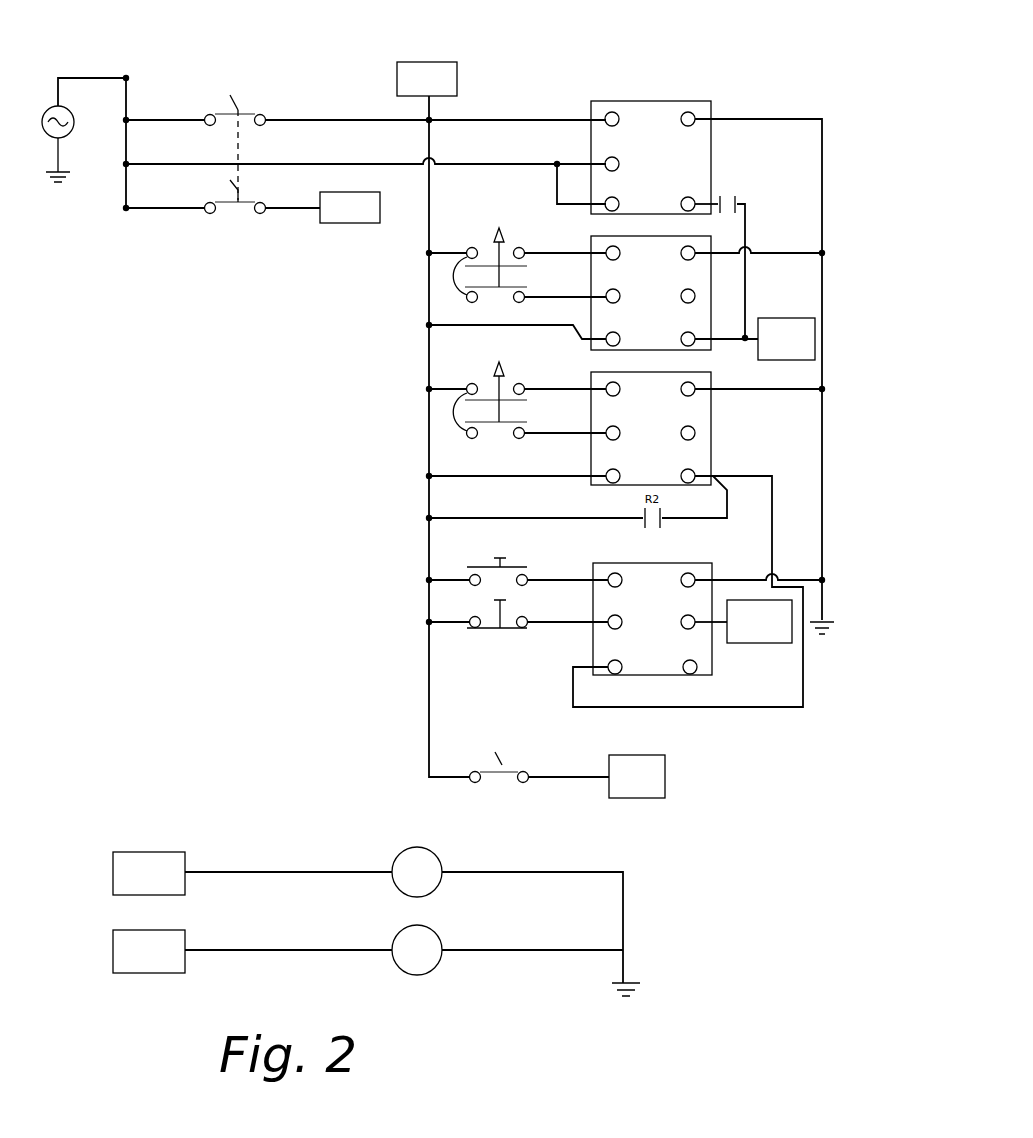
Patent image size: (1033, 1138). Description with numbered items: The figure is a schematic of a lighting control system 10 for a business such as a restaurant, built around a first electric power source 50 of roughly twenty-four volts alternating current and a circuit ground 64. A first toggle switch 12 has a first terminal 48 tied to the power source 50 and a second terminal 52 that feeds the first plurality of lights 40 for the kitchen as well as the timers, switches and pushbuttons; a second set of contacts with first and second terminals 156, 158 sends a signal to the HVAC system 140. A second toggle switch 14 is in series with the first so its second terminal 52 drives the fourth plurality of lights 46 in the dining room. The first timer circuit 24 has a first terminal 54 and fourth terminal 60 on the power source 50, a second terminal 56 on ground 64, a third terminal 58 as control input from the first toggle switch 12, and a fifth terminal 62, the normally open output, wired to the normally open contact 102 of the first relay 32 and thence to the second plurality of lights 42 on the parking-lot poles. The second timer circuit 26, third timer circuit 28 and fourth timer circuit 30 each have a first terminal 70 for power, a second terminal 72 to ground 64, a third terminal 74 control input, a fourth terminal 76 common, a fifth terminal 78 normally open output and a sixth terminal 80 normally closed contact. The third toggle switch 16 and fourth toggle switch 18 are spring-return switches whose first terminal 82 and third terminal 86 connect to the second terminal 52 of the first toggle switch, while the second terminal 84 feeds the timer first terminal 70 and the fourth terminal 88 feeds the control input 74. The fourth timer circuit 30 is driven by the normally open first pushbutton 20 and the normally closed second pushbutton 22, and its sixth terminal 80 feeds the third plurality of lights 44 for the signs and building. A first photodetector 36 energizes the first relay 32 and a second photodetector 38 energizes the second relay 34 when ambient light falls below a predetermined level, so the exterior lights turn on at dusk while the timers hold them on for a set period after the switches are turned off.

The lighting control system 10 is at (132, 503).
The first toggle switch 12 is at (263, 102).
The second toggle switch 14 is at (467, 712).
The third toggle switch 16 is at (490, 208).
The fourth toggle switch 18 is at (457, 348).
The first pushbutton 20 is at (470, 545).
The second pushbutton 22 is at (467, 653).
The first timer circuit 24 is at (647, 100).
The second timer circuit 26 is at (677, 235).
The third timer circuit 28 is at (663, 373).
The fourth timer circuit 30 is at (658, 563).
The first relay 32 is at (407, 850).
The second relay 34 is at (417, 977).
The first photodetector 36 is at (112, 882).
The second photodetector 38 is at (112, 950).
The first plurality of lights 40 is at (447, 62).
The second plurality of lights 42 is at (792, 318).
The third plurality of lights 44 is at (777, 645).
The fourth plurality of lights 46 is at (667, 775).
The first terminal 48 is at (205, 126).
The first electric power source 50 is at (77, 140).
The second terminal 52 is at (265, 126).
The first terminal 54 is at (606, 155).
The second terminal 56 is at (690, 108).
The third terminal 58 is at (610, 108).
The fourth terminal 60 is at (617, 200).
The fifth terminal 62 is at (695, 197).
The circuit ground 64 is at (821, 637).
The first terminal 70 is at (607, 250).
The second terminal 72 is at (692, 259).
The third terminal 74 is at (607, 292).
The fourth terminal 76 is at (619, 337).
The fifth terminal 78 is at (693, 334).
The sixth terminal 80 is at (681, 295).
The first terminal 82 is at (470, 248).
The second terminal 84 is at (522, 248).
The third terminal 86 is at (468, 300).
The fourth terminal 88 is at (522, 301).
The normally open contact 102 is at (735, 197).
The HVAC system 140 is at (367, 225).
The first terminal 156 is at (208, 214).
The second terminal 158 is at (262, 214).